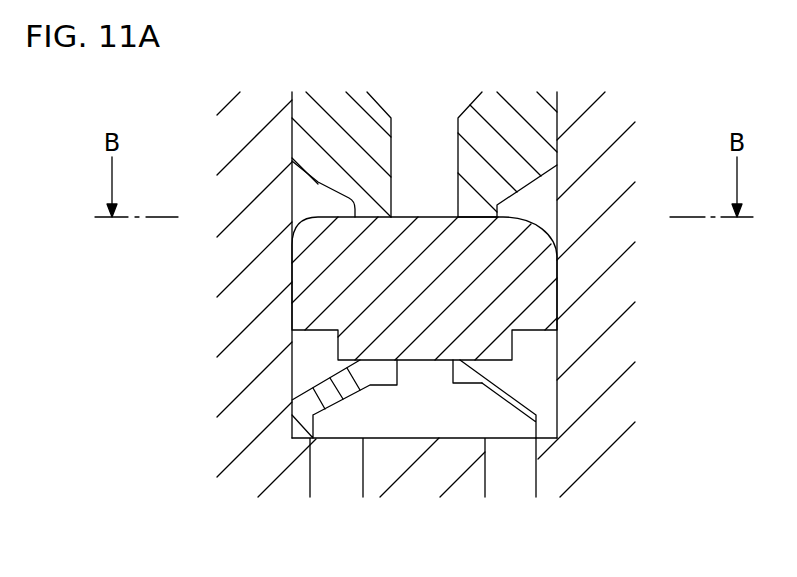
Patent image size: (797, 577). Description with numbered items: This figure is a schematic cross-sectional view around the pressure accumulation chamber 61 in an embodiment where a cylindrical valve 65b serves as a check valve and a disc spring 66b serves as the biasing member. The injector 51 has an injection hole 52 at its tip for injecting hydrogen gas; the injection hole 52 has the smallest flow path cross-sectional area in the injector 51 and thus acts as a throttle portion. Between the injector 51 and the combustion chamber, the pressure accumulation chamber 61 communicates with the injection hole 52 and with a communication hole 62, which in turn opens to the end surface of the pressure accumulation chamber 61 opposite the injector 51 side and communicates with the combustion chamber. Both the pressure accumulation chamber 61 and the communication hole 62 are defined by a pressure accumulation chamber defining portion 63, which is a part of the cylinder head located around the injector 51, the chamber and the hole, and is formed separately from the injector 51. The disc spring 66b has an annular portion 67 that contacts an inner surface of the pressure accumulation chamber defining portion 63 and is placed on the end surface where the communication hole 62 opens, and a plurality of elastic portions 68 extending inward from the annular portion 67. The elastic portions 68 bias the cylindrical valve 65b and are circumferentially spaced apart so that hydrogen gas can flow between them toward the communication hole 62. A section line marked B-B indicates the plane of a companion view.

The injector 51 is at (538, 113).
The injection hole 52 is at (405, 150).
The pressure accumulation chamber 61 is at (310, 370).
The communication hole 62 is at (350, 478).
The pressure accumulation chamber defining portion 63 is at (590, 184).
The cylindrical valve 65b is at (542, 312).
The disc spring 66b is at (540, 392).
The annular portion 67 is at (545, 431).
The elastic portions 68 is at (500, 383).